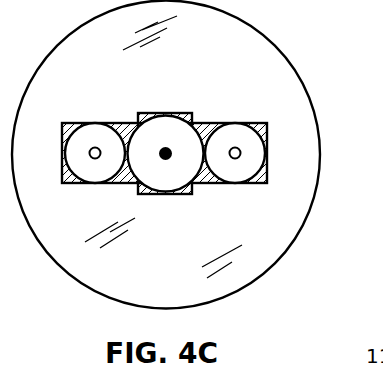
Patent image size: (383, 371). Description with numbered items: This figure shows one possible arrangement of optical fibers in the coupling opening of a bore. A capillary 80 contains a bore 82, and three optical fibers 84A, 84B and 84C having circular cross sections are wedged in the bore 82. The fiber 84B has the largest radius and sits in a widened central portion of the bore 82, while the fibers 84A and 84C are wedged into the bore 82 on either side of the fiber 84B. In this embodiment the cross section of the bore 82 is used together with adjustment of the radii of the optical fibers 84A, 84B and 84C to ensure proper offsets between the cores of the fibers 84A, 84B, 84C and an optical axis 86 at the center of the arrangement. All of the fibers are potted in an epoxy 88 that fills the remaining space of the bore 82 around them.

The capillary 80 is at (255, 29).
The bore 82 is at (187, 195).
The optical fiber 84A is at (93, 132).
The optical fiber 84B is at (127, 168).
The optical fiber 84C is at (234, 168).
The optical axis 86 is at (165, 148).
The epoxy 88 is at (210, 126).